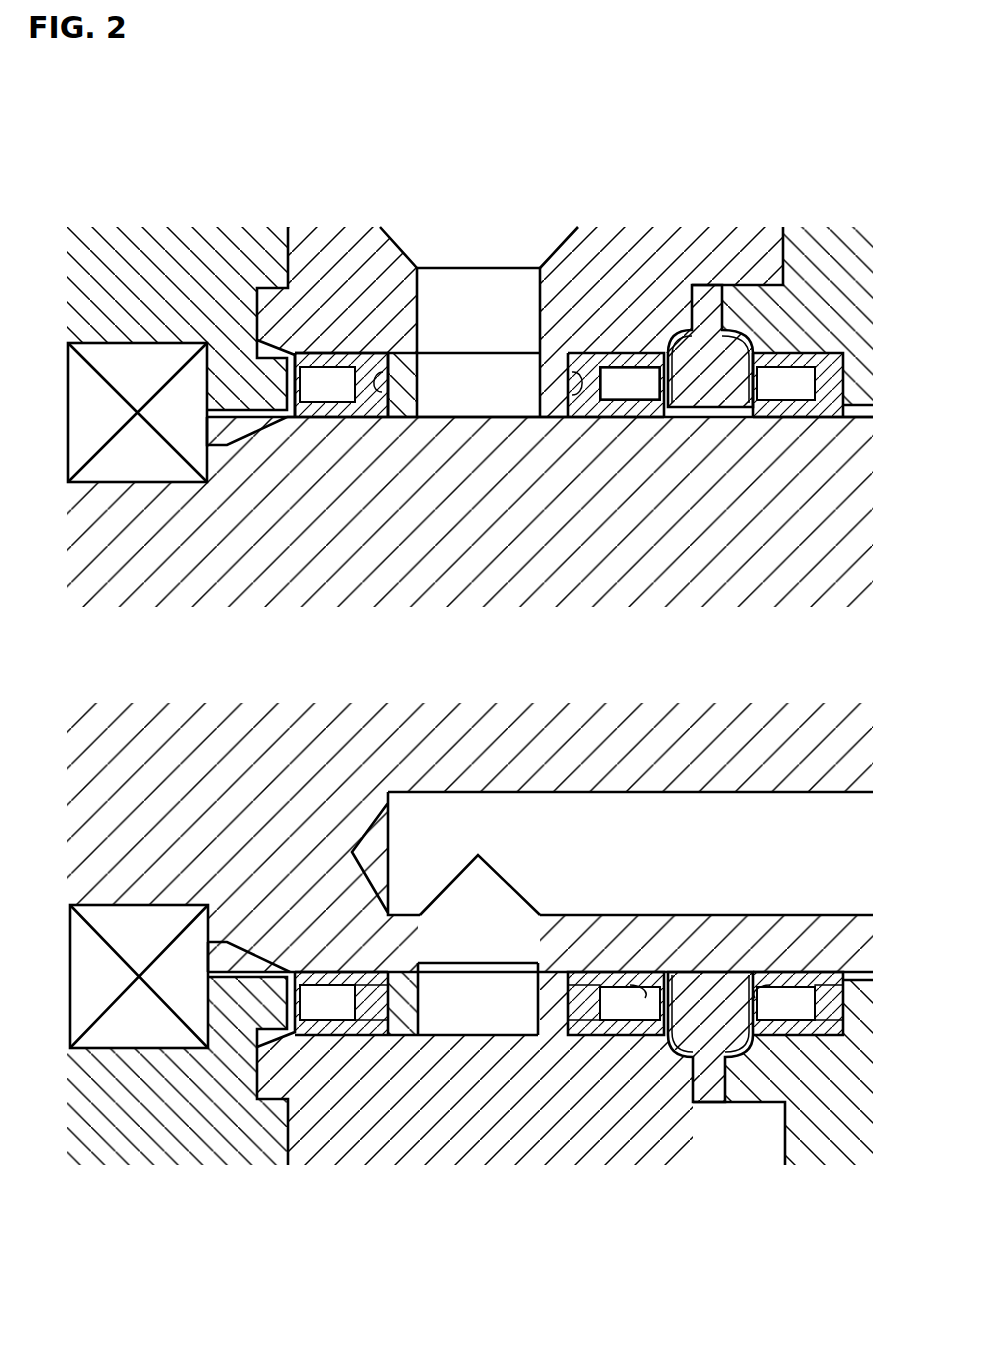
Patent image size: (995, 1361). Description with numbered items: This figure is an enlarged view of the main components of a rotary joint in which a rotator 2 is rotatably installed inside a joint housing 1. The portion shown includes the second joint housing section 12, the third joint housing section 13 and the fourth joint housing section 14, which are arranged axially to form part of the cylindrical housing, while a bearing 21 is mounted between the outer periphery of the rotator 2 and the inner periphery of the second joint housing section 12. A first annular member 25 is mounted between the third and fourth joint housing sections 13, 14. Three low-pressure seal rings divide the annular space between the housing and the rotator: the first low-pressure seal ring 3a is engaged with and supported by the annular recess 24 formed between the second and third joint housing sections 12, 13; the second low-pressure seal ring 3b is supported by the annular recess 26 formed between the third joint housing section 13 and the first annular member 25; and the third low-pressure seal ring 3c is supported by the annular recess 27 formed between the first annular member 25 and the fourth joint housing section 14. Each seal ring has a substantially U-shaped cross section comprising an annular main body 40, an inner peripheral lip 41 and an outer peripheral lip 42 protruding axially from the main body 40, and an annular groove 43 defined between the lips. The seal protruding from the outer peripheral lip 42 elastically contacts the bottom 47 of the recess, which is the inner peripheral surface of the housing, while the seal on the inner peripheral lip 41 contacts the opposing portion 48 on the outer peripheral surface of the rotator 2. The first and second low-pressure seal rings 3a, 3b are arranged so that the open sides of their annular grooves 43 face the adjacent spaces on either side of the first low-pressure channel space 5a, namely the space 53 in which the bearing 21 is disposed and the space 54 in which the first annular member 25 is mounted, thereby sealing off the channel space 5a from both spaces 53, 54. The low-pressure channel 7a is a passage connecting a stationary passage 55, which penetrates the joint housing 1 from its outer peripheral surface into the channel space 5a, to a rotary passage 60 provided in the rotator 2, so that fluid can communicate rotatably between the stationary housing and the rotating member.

The joint housing 1 is at (484, 1170).
The rotator 2 is at (90, 705).
The first low-pressure seal ring 3a is at (327, 418).
The second low-pressure seal ring 3b is at (610, 417).
The third low-pressure seal ring 3c is at (780, 417).
The first low-pressure channel space 5a is at (467, 417).
The low-pressure channel 7a is at (756, 810).
The second joint housing section 12 is at (115, 255).
The third joint housing section 13 is at (328, 252).
The fourth joint housing section 14 is at (812, 250).
The bearing 21 is at (138, 477).
The annular recess 24 is at (388, 383).
The first annular member 25 is at (693, 417).
The annular recess 26 is at (568, 372).
The annular recess 27 is at (838, 372).
The annular main body 40 is at (377, 1020).
The inner peripheral lip 41 is at (345, 978).
The outer peripheral lip 42 is at (327, 1035).
The annular groove 43 is at (640, 377).
The bottom of annular recess 47 is at (388, 1010).
The opposing portion of rotator 48 is at (362, 910).
The space in which bearings are disposed 53 is at (245, 422).
The space in which first annular member is mounted 54 is at (710, 1000).
The stationary passage 55 is at (537, 298).
The rotary passage 60 is at (593, 810).